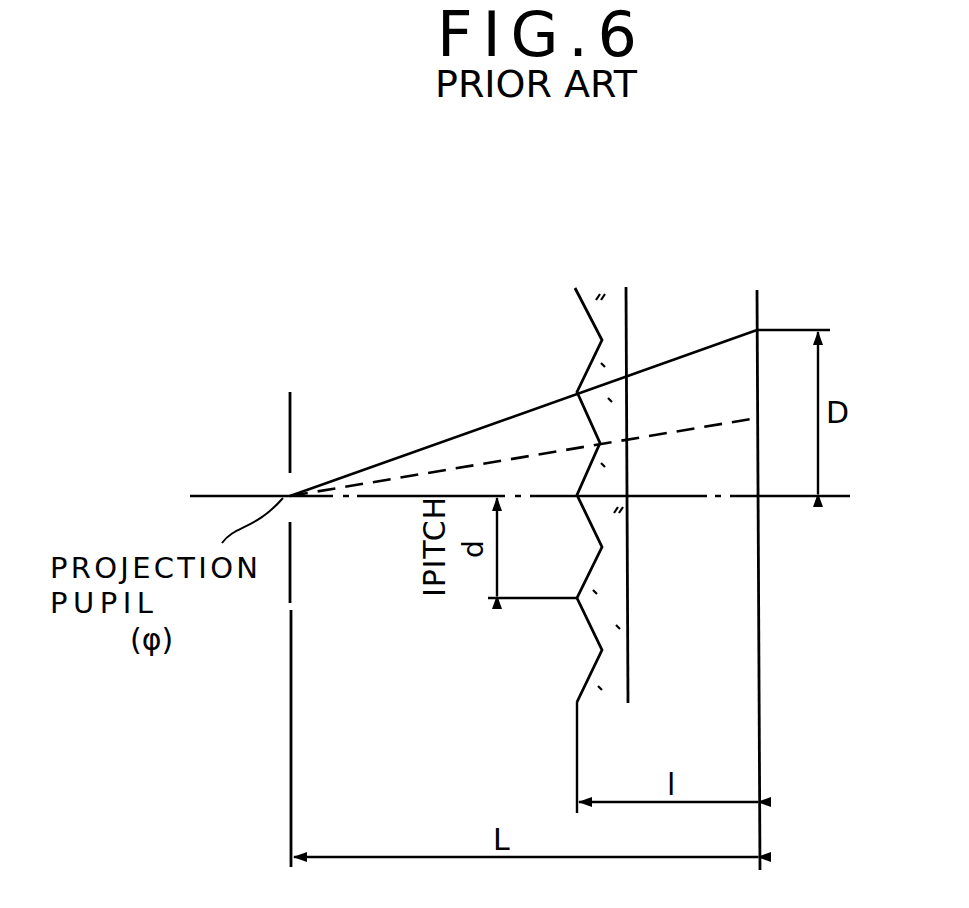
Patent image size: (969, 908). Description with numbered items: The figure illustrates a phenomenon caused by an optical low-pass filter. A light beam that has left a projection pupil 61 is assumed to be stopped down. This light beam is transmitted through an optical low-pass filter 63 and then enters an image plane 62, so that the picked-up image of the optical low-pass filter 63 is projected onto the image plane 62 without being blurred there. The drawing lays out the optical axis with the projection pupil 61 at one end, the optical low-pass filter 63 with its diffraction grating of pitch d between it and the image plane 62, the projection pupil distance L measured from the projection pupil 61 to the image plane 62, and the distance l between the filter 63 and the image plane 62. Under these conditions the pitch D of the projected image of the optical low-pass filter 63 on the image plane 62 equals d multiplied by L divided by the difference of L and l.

The projection pupil 61 is at (289, 408).
The image plane 62 is at (757, 290).
The optical low-pass filter 63 is at (607, 287).